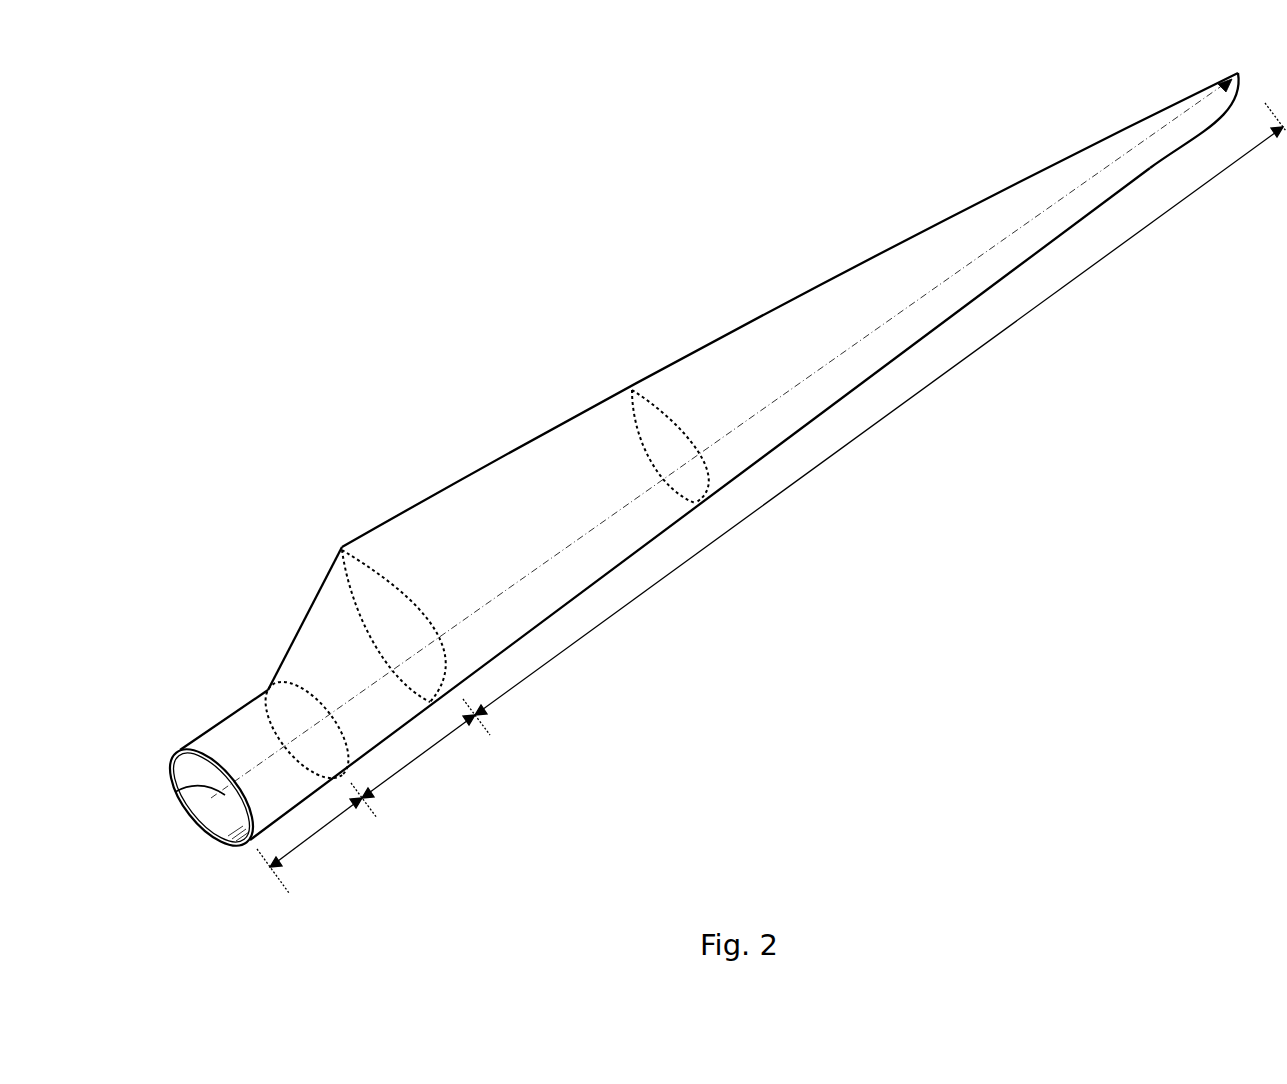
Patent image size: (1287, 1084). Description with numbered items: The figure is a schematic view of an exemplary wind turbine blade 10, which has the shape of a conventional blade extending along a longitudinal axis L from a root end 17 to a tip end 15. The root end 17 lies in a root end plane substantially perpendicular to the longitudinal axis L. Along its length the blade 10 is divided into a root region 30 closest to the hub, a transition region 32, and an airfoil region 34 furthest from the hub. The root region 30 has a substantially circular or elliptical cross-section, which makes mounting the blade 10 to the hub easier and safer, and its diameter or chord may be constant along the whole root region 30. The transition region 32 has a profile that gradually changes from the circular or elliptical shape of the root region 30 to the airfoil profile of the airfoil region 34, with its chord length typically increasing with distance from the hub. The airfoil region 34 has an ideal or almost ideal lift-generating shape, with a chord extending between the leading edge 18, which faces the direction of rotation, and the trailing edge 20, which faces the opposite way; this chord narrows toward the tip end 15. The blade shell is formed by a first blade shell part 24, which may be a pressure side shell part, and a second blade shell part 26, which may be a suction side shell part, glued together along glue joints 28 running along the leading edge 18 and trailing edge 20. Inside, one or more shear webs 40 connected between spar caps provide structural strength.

The wind turbine blade 10 is at (521, 319).
The tip end 15 is at (1238, 73).
The root end 17 is at (175, 760).
The leading edge 18 is at (917, 343).
The trailing edge 20 is at (798, 298).
The first blade shell part 24 is at (202, 753).
The second blade shell part 26 is at (205, 833).
The glue joints 28 is at (193, 768).
The root region 30 is at (320, 832).
The transition region 32 is at (423, 755).
The airfoil region 34 is at (797, 480).
The shear webs 40 is at (345, 546).
The longitudinal axis L is at (175, 795).